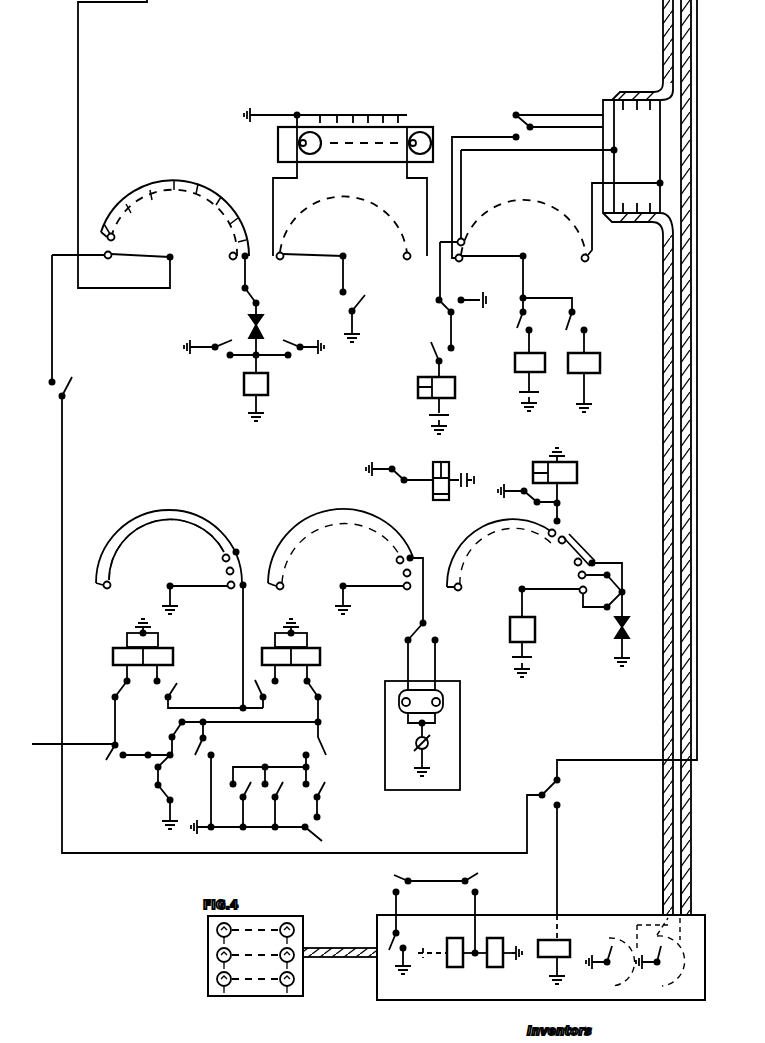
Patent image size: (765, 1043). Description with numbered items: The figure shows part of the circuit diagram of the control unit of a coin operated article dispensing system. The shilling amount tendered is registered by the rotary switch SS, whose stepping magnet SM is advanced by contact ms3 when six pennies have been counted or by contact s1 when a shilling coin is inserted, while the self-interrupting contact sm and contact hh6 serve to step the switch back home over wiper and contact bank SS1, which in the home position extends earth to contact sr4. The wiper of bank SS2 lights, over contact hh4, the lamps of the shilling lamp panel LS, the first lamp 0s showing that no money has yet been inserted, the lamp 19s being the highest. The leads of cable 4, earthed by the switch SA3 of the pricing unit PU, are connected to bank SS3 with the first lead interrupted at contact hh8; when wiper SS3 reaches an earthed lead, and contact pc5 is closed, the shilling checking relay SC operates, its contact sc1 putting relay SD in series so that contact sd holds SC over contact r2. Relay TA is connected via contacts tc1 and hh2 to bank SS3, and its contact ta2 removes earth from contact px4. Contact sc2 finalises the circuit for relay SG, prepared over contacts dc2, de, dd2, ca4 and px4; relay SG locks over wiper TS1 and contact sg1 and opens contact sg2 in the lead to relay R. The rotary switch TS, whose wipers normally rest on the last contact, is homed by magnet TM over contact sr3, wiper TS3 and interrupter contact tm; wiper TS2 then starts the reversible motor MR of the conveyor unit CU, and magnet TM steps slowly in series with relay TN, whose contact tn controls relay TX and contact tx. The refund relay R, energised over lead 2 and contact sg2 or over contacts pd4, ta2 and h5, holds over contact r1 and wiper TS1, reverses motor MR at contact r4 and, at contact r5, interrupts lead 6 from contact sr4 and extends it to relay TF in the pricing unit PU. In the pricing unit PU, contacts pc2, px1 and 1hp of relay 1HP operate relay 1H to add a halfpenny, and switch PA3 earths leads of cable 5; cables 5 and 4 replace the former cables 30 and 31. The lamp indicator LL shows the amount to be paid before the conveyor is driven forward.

The rotary switch SS is at (178, 140).
The contact bank and wiper SS1 is at (177, 250).
The contact bank and wiper SS2 is at (344, 234).
The contact bank and wiper SS3 is at (560, 227).
The shilling lamp panel LS is at (338, 182).
The first lamp of indicator LS 0s is at (317, 145).
The lamp of indicator LS 19s is at (404, 145).
The contact hh8 is at (529, 204).
The contact hh6 is at (260, 285).
The contact hh4 is at (360, 299).
The contact hh2 is at (451, 359).
The self-interrupting contact sm is at (266, 344).
The contact ms3 is at (222, 353).
The contact s1 is at (290, 353).
The magnet SM is at (269, 397).
The contact sr4 is at (68, 381).
The contact tc1 is at (451, 317).
The contact pc5 is at (512, 304).
The contact sc1 is at (561, 325).
The relay TA is at (429, 398).
The shilling checking relay SC is at (522, 375).
The relay SD is at (595, 382).
The contact tn is at (399, 467).
The relay TX is at (453, 474).
The relay TN is at (566, 486).
The contact tx is at (527, 499).
The rotary switch TS is at (169, 539).
The contact bank and wiper TS1 is at (175, 629).
The contact bank and wiper TS2 is at (345, 566).
The contact bank and wiper TS3 is at (536, 564).
The contact r4 is at (424, 649).
The conveyor unit CU is at (458, 733).
The reversible motor MR is at (421, 733).
The magnet TM is at (510, 633).
The contact sr3 is at (604, 591).
The interrupter contact tm is at (630, 629).
The relay R is at (149, 652).
The relay SG is at (302, 652).
The contact sg2 is at (109, 711).
The contact r1 is at (213, 691).
The contact sg1 is at (273, 694).
The contact r2 is at (322, 701).
The lead 2 is at (73, 737).
The contact pd4 is at (139, 762).
The contact px4 is at (232, 735).
The contact ta2 is at (161, 765).
The contact h5 is at (171, 805).
The contact sd is at (212, 775).
The contact sc2 is at (290, 753).
The contact dc2 is at (232, 806).
The contact de is at (269, 806).
The contact dd2 is at (307, 801).
The contact ca4 is at (269, 830).
The lead 6 is at (578, 766).
The contact r5 is at (558, 793).
The contact pc2 is at (420, 906).
The contact px1 is at (483, 915).
The pricing unit PU is at (385, 945).
The contact 1hp is at (426, 946).
The relay 1HP is at (465, 961).
The relay 1H is at (504, 961).
The relay TF is at (558, 949).
The rotary switch SA3 is at (610, 969).
The rotary switch PA3 is at (660, 968).
The cable 31 is at (652, 934).
The cable 30 is at (691, 932).
The cable 4 is at (664, 868).
The cable 5 is at (684, 868).
The lamp indicator LL is at (207, 925).